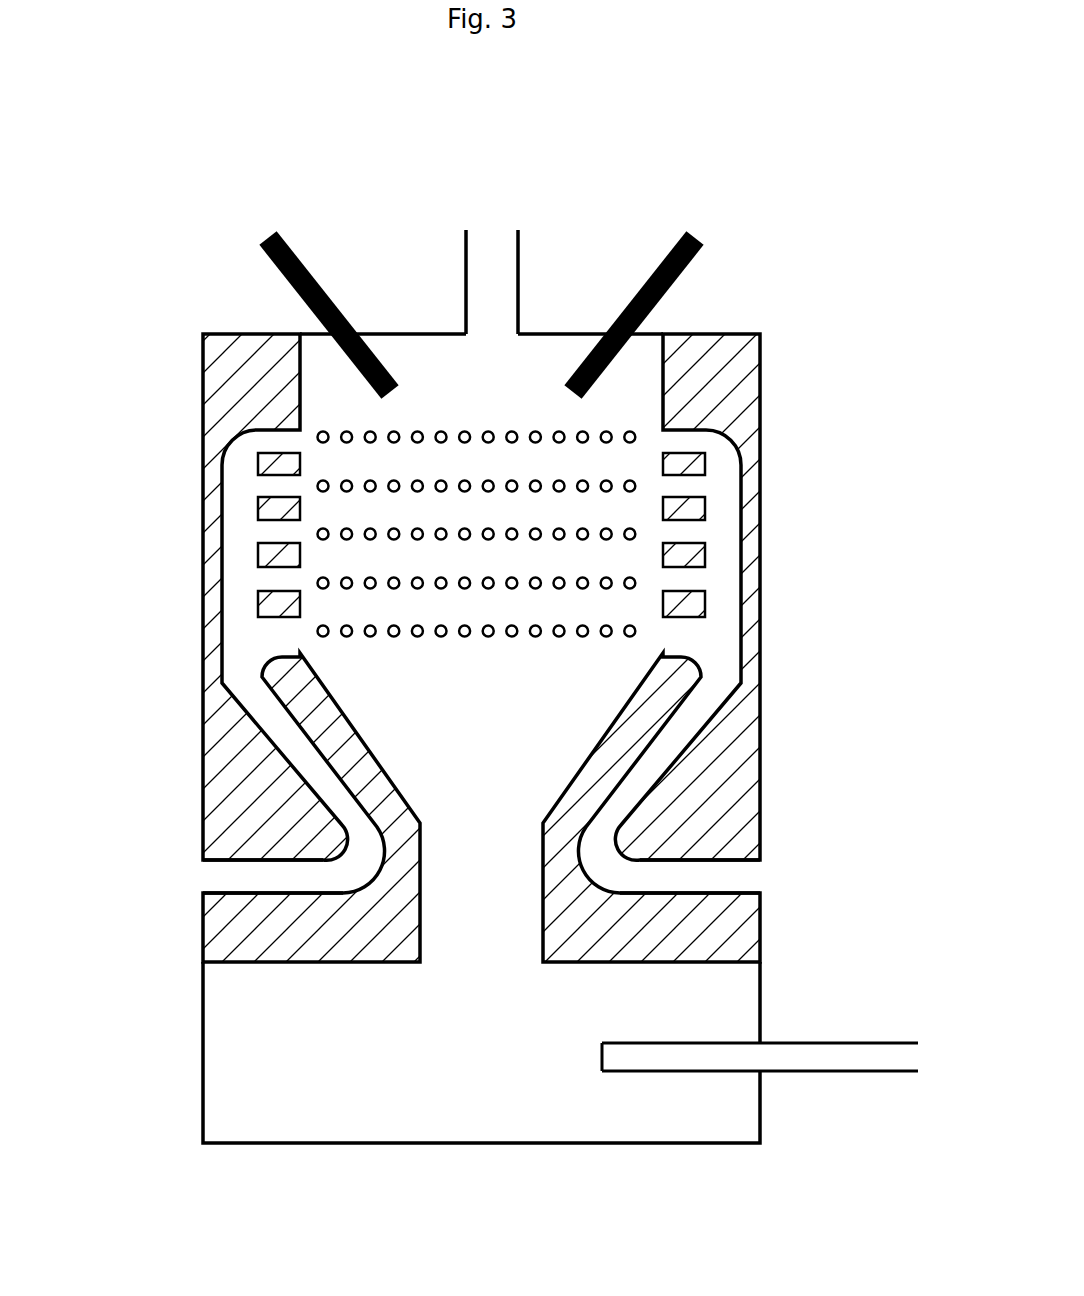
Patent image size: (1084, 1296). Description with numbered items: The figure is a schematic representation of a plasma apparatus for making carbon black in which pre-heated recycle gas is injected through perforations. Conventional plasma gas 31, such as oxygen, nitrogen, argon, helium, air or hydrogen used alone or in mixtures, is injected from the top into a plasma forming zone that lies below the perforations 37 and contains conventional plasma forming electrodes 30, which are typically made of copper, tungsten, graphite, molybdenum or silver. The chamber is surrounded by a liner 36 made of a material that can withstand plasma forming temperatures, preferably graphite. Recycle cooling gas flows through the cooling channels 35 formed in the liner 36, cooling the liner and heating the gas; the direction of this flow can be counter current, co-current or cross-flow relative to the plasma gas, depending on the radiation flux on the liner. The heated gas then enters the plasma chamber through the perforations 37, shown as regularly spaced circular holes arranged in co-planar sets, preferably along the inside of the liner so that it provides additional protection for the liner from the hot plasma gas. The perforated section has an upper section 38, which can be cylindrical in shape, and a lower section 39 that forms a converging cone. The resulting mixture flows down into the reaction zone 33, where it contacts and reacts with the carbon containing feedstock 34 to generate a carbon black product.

The plasma forming electrodes 30 is at (314, 216).
The plasma gas 31 is at (490, 243).
The reaction zone 33 is at (481, 1052).
The carbon containing feedstock 34 is at (890, 1057).
The cooling channels 35 is at (175, 872).
The liner 36 is at (196, 832).
The perforations 37 is at (460, 425).
The upper section 38 is at (141, 337).
The lower section 39 is at (143, 660).